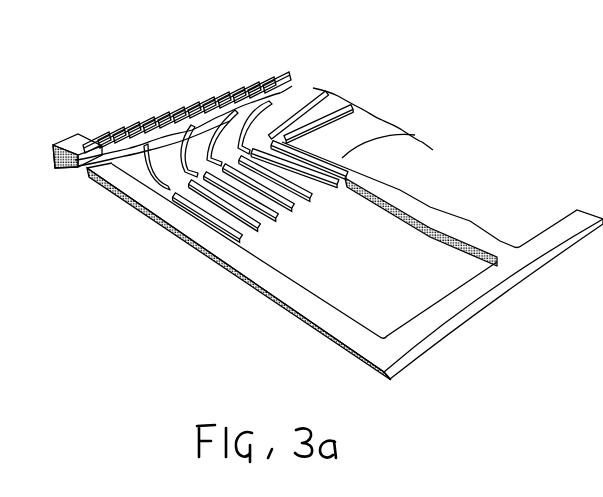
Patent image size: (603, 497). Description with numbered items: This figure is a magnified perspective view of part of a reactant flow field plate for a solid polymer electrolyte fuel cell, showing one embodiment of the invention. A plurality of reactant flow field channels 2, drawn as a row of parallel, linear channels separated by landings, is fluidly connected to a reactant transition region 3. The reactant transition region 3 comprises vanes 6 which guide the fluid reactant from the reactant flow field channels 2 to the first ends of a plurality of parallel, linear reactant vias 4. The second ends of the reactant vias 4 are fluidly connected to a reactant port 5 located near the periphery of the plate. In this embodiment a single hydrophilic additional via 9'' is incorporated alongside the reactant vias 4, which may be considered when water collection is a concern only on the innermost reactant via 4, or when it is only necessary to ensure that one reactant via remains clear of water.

The reactant flow field channels 2 is at (162, 112).
The reactant transition region 3 is at (140, 166).
The reactant vias 4 is at (272, 243).
The reactant port 5 is at (398, 302).
The vanes 6 is at (292, 97).
The hydrophilic additional via 9'' is at (408, 135).